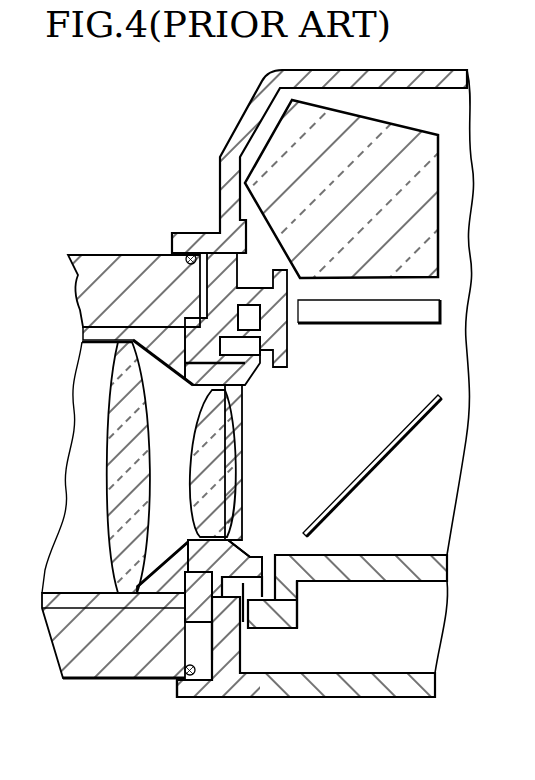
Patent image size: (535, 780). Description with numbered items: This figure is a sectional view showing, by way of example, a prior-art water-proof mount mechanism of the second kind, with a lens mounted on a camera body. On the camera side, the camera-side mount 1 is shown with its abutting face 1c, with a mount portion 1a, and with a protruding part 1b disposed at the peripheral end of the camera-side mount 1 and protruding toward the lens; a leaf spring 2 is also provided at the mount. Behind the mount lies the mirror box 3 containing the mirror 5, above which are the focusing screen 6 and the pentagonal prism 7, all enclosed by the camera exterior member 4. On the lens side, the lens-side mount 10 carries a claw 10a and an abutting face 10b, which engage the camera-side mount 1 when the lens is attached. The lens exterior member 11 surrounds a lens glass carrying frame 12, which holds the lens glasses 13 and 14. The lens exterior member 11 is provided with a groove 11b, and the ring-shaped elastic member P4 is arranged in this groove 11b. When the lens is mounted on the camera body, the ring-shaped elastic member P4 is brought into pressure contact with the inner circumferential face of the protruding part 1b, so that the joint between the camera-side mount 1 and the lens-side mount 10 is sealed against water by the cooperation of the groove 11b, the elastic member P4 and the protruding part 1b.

The camera-side mount 1 is at (222, 687).
The body side bayonet claw 1a is at (243, 558).
The protruding part 1b is at (190, 692).
The abutting face 1c is at (233, 645).
The leaf spring 2 is at (262, 628).
The mirror box 3 is at (280, 618).
The camera exterior member 4 is at (310, 686).
The mirror 5 is at (357, 480).
The focusing screen 6 is at (437, 312).
The pentagonal prism 7 is at (437, 213).
The lens-side mount 10 is at (187, 592).
The claw 10a is at (302, 602).
The abutting face 10b is at (213, 320).
The lens exterior member 11 is at (63, 660).
The groove 11b is at (183, 666).
The lens glass carrying frame 12 is at (183, 560).
The lens glass 13 is at (200, 463).
The lens glass 14 is at (117, 400).
The ring-shaped elastic member P4 is at (188, 254).